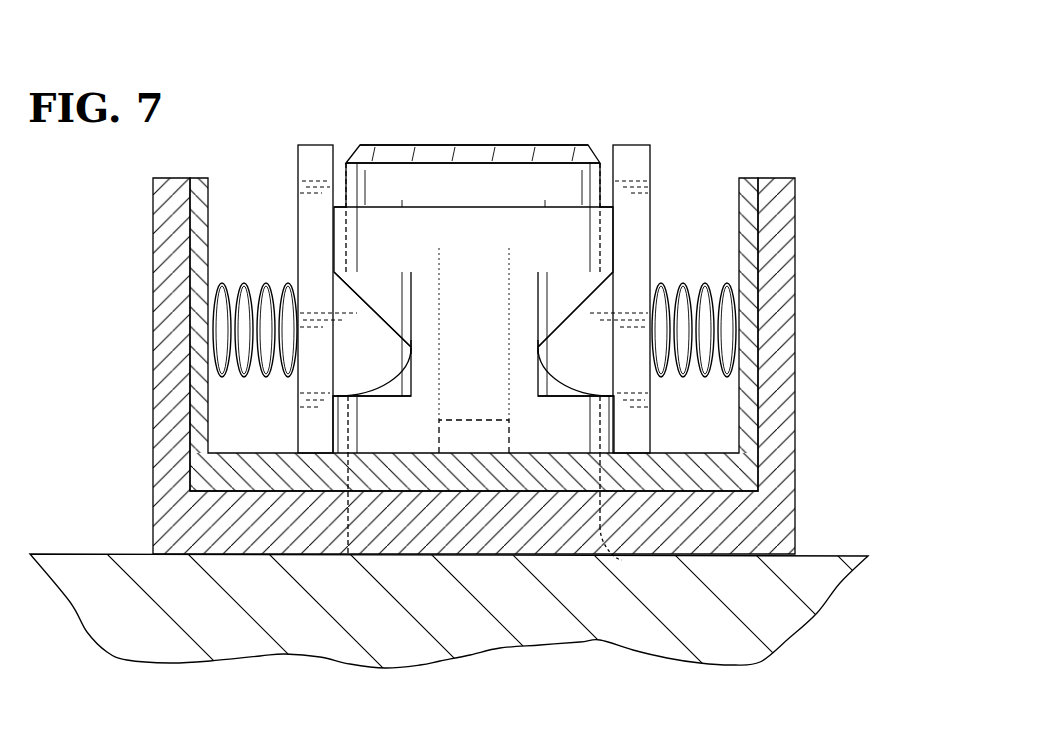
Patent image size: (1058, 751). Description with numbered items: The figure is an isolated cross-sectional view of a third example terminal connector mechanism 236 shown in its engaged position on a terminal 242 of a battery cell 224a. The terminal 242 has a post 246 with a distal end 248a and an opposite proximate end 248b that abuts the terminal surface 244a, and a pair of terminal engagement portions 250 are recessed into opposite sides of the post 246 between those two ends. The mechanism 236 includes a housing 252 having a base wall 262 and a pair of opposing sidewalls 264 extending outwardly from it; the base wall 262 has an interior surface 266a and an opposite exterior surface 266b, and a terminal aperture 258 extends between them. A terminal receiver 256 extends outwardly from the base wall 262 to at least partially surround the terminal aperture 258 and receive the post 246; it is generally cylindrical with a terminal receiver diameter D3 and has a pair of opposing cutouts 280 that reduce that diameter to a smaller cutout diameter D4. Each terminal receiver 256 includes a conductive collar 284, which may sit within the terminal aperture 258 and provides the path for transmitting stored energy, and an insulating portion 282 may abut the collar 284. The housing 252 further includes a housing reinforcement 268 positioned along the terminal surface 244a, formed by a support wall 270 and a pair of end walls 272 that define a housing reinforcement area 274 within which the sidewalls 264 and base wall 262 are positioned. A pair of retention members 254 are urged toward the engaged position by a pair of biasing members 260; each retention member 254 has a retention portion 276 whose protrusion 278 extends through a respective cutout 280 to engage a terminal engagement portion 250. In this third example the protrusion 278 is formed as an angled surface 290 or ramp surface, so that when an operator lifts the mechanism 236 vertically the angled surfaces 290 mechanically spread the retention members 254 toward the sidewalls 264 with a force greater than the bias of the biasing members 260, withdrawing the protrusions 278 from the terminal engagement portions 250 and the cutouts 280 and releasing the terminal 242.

The battery cell 224a is at (790, 632).
The terminal connector mechanism 236 is at (220, 80).
The terminal 242 is at (569, 141).
The terminal surface 244a is at (790, 545).
The post 246 is at (575, 190).
The distal end 248a is at (438, 145).
The proximate end 248b is at (413, 503).
The terminal engagement portion 250 is at (410, 347).
The housing 252 is at (752, 138).
The retention member 254 is at (291, 134).
The terminal receiver 256 is at (493, 192).
The terminal aperture 258 is at (622, 560).
The biasing member 260 is at (252, 282).
The base wall 262 is at (752, 470).
The sidewall 264 is at (195, 246).
The interior surface 266a is at (330, 437).
The exterior surface 266b is at (272, 490).
The housing reinforcement 268 is at (824, 205).
The support wall 270 is at (212, 520).
The end wall 272 is at (160, 342).
The housing reinforcement area 274 is at (250, 183).
The retention portion 276 is at (337, 378).
The protrusion 278 is at (375, 330).
The cutout 280 is at (403, 285).
The insulating portion 282 is at (522, 438).
The conductive collar 284 is at (490, 415).
The angled surface 290 is at (372, 308).
The terminal receiver diameter D3 is at (617, 437).
The cutout diameter D4 is at (535, 347).